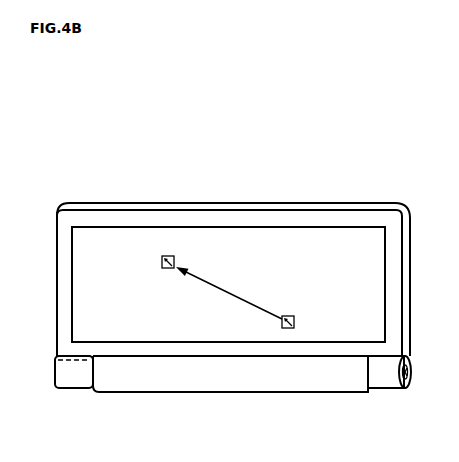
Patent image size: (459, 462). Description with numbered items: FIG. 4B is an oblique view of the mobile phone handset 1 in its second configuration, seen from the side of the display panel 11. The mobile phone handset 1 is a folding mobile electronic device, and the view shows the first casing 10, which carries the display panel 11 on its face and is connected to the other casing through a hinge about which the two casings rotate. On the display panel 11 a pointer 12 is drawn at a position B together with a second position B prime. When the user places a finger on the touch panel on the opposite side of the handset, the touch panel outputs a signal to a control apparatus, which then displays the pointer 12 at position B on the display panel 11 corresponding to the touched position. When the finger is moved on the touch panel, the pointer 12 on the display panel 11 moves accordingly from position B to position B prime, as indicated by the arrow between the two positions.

The mobile phone handset 1 is at (337, 162).
The first casing 10 is at (87, 210).
The display panel 11 is at (212, 238).
The pointer 12 is at (289, 330).